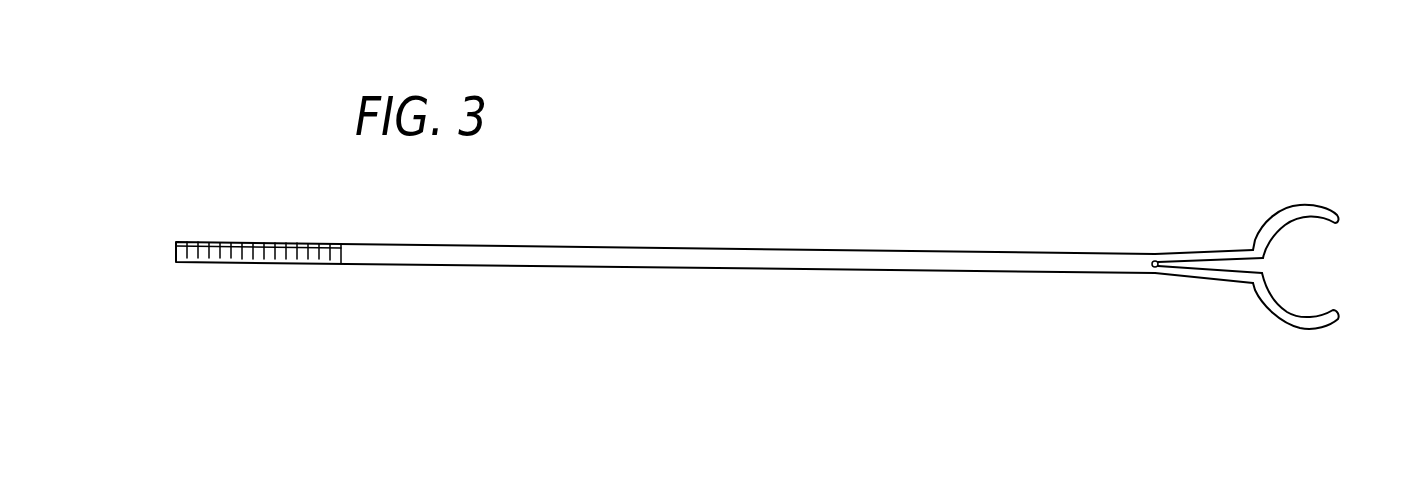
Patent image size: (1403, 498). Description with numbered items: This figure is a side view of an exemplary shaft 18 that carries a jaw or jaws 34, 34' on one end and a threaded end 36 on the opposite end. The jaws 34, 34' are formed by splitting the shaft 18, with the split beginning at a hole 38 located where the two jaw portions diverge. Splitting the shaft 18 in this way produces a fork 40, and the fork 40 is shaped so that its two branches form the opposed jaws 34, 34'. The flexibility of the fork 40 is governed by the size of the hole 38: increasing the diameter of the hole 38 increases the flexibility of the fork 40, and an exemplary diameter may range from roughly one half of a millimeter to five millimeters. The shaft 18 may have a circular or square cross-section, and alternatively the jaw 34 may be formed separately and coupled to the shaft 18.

The shaft 18 is at (627, 249).
The threaded end 36 is at (293, 258).
The hole 38 is at (1148, 268).
The fork 40 is at (1222, 255).
The jaw 34' is at (1310, 156).
The jaw 34 is at (1247, 350).